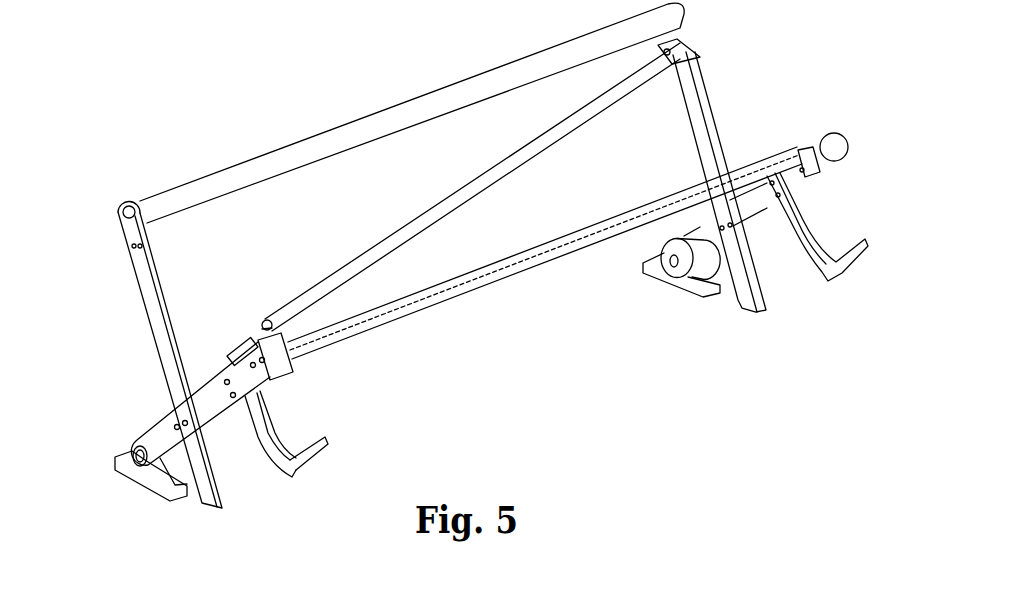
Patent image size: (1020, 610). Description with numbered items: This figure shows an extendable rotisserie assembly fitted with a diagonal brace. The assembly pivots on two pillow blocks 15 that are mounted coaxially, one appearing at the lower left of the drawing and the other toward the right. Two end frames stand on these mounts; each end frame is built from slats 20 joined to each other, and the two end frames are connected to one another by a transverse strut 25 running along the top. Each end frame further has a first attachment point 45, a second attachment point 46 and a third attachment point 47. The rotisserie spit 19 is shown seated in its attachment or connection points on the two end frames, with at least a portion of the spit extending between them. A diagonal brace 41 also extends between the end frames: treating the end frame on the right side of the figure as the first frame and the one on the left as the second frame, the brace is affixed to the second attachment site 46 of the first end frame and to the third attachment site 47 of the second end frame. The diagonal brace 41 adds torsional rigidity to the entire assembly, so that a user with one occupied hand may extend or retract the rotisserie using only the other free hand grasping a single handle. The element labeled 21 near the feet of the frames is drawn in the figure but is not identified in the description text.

The pillow block 15 is at (163, 489).
The rotisserie spit 19 is at (527, 253).
The slat 20 is at (143, 315).
The support arm 21 is at (212, 507).
The transverse strut 25 is at (277, 148).
The diagonal brace 41 is at (500, 164).
The first attachment point 45 is at (140, 443).
The second attachment point 46 is at (123, 206).
The third attachment point 47 is at (294, 365).